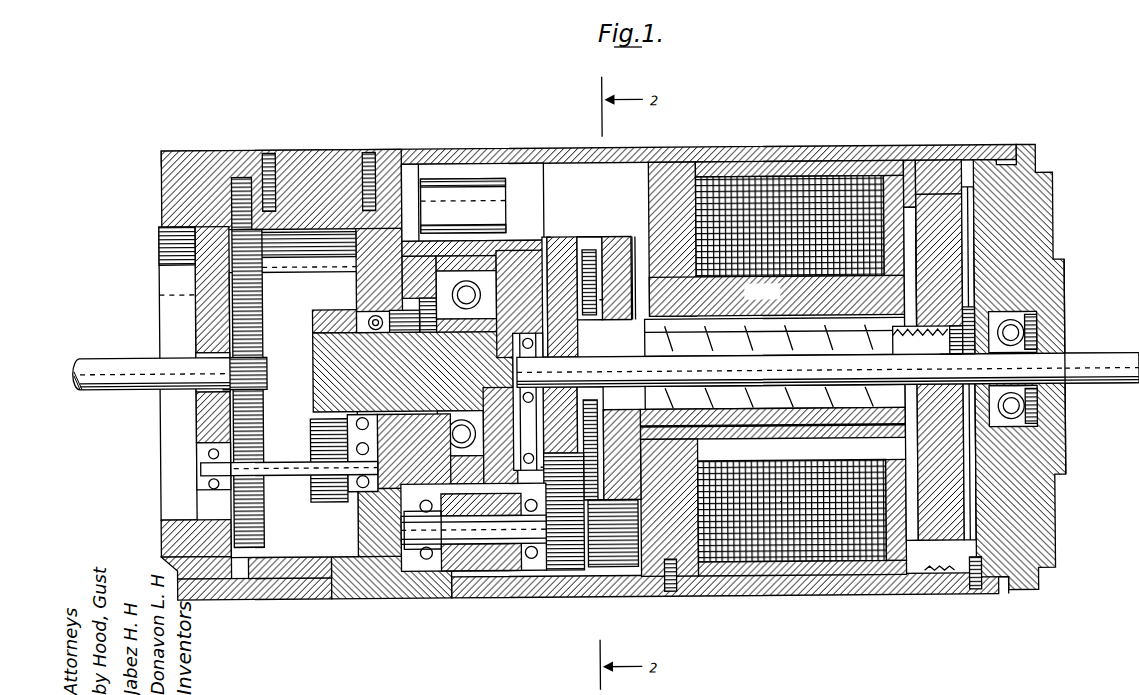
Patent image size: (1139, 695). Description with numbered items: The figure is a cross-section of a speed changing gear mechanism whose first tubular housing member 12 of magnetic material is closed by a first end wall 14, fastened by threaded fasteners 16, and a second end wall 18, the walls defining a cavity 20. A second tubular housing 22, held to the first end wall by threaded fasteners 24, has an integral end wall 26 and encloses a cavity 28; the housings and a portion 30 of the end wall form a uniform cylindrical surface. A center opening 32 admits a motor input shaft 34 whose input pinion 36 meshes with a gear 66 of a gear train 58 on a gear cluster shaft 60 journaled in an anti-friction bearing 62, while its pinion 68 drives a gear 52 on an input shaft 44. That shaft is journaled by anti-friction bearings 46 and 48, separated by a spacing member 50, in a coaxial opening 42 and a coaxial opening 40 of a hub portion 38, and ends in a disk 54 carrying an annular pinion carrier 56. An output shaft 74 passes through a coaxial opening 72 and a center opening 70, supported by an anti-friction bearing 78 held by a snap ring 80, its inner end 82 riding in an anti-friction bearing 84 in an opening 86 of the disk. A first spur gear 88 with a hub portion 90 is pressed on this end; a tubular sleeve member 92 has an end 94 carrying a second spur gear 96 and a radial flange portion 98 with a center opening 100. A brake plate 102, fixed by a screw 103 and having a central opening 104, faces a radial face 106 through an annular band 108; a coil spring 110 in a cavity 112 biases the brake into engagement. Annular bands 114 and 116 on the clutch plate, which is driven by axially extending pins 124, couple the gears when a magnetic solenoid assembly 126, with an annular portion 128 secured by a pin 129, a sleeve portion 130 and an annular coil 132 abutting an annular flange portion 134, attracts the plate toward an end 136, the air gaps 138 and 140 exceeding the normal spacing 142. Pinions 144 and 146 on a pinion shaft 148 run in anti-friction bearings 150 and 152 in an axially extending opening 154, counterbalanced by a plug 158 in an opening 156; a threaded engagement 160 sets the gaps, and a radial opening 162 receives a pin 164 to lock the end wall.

The first cylindrical tubular housing member 12 is at (855, 149).
The first end wall 14 is at (376, 560).
The threaded fasteners 16 is at (376, 150).
The second end wall 18 is at (1054, 212).
The cavity 20 is at (612, 186).
The second cylindrical tubular housing 22 is at (213, 148).
The threaded fasteners 24 is at (277, 150).
The end wall 26 is at (160, 252).
The cavity 28 is at (305, 271).
The portion of end wall 30 is at (314, 597).
The coaxial center opening 32 is at (198, 390).
The input shaft 34 is at (108, 353).
The input pinion 36 is at (260, 354).
The coaxial hub portion 38 is at (412, 240).
The coaxial opening 40 is at (399, 461).
The coaxial opening 42 is at (420, 305).
The input shaft 44 is at (313, 367).
The anti-friction bearing 46 is at (370, 314).
The anti-friction bearing 48 is at (473, 508).
The spacing member 50 is at (415, 331).
The gear 52 is at (313, 322).
The disk 54 is at (522, 440).
The annular pinion carrier 56 is at (490, 545).
The gear train 58 is at (308, 548).
The gear cluster shaft 60 is at (288, 478).
The anti-friction bearing 62 is at (205, 465).
The gear 66 is at (267, 400).
The pinion 68 is at (333, 500).
The coaxial center opening 70 is at (988, 432).
The coaxial opening 72 is at (1066, 408).
The output shaft 74 is at (1105, 357).
The anti-friction bearing 78 is at (1010, 432).
The snap ring 80 is at (995, 432).
The inner end of output shaft 82 is at (560, 360).
The anti-friction bearing 84 is at (532, 320).
The opening 86 is at (515, 343).
The first spur gear 88 is at (557, 237).
The hub portion 90 is at (828, 370).
The tubular sleeve member 92 is at (700, 440).
The end of sleeve member 94 is at (769, 363).
The second spur gear 96 is at (620, 237).
The radial flange portion 98 is at (906, 420).
The coaxial center opening 100 is at (905, 367).
The brake plate 102 is at (940, 510).
The screw 103 is at (970, 313).
The central opening 104 is at (942, 360).
The radial face 106 is at (970, 290).
The annular band of braking material 108 is at (978, 221).
The coil spring 110 is at (589, 250).
The cavity 112 is at (602, 450).
The annular band 114 is at (559, 297).
The annular band 116 is at (605, 300).
The axially extending pins 124 is at (540, 467).
The magnetic solenoid assembly 126 is at (813, 163).
The annular portion of magnetic frame 128 is at (683, 163).
The pin 129 is at (672, 592).
The sleeve portion of magnetic frame 130 is at (772, 300).
The annular coil 132 is at (748, 163).
The annular flange portion 134 is at (909, 163).
The end of sleeve 136 is at (911, 275).
The air gap 138 is at (940, 290).
The air gap 140 is at (925, 170).
The normal spacing 142 is at (606, 237).
The pinion 144 is at (567, 570).
The pinion 146 is at (628, 567).
The pinion shaft 148 is at (515, 543).
The anti-friction bearing 150 is at (432, 545).
The anti-friction bearing 152 is at (531, 545).
The axially extending opening 154 is at (462, 548).
The axially extending opening 156 is at (550, 197).
The pin or plug 158 is at (462, 206).
The threaded engagement 160 is at (928, 578).
The radial opening 162 is at (1003, 597).
The pin 164 is at (974, 595).